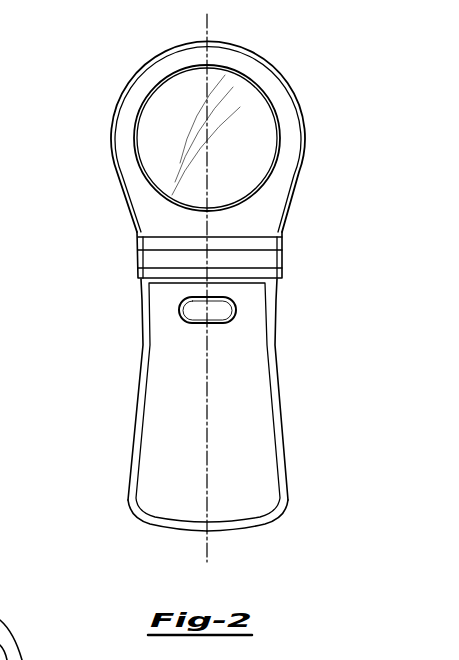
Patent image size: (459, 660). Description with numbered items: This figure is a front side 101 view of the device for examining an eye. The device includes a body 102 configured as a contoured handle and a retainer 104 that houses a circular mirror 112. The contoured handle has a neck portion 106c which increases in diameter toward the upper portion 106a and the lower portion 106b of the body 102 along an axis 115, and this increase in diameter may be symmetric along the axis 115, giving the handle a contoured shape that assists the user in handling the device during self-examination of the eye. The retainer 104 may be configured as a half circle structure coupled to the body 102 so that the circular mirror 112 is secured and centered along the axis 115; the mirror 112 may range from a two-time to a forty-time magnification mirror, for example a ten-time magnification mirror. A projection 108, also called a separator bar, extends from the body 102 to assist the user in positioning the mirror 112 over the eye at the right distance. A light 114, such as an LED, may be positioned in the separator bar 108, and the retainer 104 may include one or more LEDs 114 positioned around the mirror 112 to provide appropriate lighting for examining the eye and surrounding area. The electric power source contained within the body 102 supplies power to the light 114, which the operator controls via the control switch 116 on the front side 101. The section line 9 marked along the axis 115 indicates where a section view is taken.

The section line 9- 9 is at (217, 27).
The front side 101 is at (178, 447).
The body 102 is at (191, 396).
The retainer 104 is at (194, 116).
The upper portion 106a is at (285, 209).
The lower portion 106b is at (288, 504).
The neck portion 106c is at (277, 362).
The projection 108 is at (253, 259).
The mirror 112 is at (248, 106).
The light 114 is at (183, 93).
The axis 115 is at (213, 537).
The control switch 116 is at (163, 311).